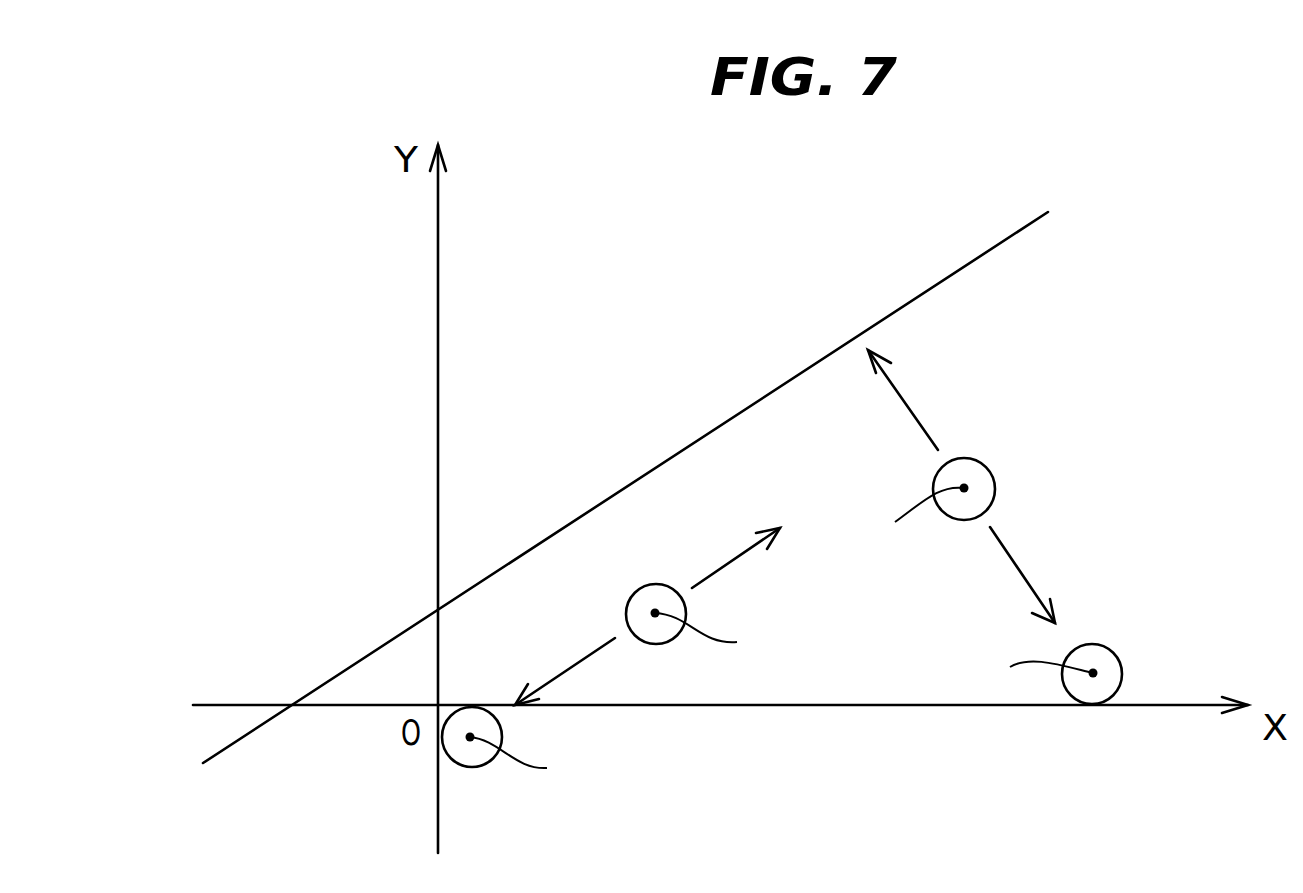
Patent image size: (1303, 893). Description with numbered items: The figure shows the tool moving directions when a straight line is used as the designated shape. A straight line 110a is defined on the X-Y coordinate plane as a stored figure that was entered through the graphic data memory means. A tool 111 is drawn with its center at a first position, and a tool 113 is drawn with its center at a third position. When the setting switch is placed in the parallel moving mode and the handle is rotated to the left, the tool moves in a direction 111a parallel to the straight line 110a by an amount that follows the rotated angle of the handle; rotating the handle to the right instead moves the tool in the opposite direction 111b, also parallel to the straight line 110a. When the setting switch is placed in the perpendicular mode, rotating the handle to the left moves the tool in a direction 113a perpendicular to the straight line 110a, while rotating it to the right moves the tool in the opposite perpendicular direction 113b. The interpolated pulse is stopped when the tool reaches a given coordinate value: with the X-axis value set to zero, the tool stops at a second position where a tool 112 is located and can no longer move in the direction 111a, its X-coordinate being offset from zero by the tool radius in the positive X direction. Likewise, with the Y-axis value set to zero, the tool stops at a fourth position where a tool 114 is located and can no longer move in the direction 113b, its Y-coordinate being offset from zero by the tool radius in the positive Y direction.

The straight line 110a is at (927, 287).
The tool 111 is at (656, 645).
The direction 111a is at (570, 667).
The direction 111b is at (718, 568).
The tool 112 is at (473, 767).
The tool 113 is at (990, 463).
The direction 113a is at (910, 400).
The direction 113b is at (1020, 562).
The tool 114 is at (1117, 658).